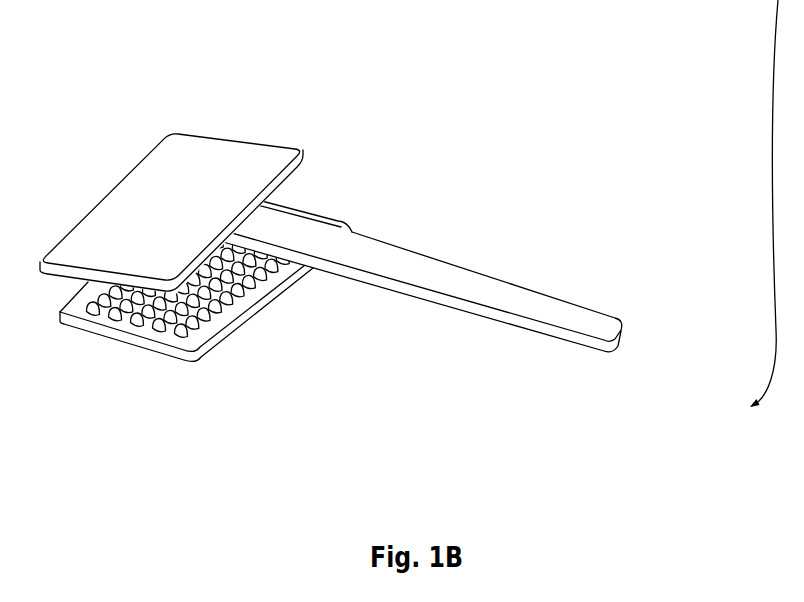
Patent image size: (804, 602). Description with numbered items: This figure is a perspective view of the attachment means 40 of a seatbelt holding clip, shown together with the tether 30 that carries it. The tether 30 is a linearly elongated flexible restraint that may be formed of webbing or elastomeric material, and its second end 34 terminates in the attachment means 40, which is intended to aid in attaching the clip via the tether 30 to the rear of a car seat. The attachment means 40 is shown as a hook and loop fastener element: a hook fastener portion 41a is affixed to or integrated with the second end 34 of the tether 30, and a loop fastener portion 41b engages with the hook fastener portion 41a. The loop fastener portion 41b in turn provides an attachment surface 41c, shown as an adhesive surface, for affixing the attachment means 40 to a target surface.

The tether 30 is at (423, 228).
The second end 34 is at (293, 228).
The attachment means 40 is at (171, 164).
The hook fastener portion 41a is at (117, 200).
The loop fastener portion 41b is at (186, 353).
The attachment surface 41c is at (250, 313).